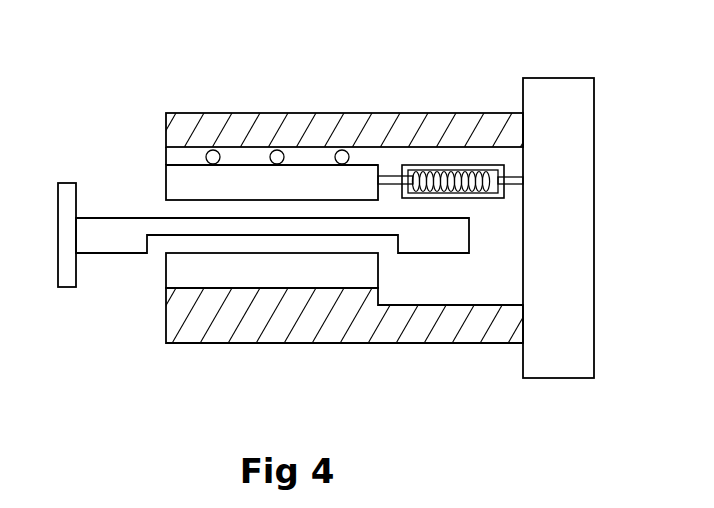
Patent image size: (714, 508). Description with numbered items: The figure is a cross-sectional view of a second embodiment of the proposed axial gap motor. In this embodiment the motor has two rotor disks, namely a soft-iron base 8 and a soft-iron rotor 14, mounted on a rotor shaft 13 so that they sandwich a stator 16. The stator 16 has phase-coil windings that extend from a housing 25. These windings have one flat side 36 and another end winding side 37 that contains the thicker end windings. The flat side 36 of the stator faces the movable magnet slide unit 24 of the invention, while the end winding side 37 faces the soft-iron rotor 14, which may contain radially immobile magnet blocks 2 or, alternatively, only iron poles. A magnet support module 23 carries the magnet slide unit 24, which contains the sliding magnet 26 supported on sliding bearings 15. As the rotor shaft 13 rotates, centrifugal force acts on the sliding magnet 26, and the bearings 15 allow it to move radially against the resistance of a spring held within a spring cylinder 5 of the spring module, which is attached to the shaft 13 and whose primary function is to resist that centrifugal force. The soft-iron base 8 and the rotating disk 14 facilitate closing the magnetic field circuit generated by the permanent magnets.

The radially immobile magnet blocks 2 is at (233, 270).
The spring cylinder 5 is at (508, 165).
The soft-iron base 8 is at (318, 128).
The rotor shaft 13 is at (585, 234).
The soft-iron rotor 14 is at (308, 326).
The sliding bearings 15 is at (217, 157).
The stator 16 is at (130, 238).
The magnet support module 23 is at (356, 90).
The magnet slide unit 24 is at (152, 157).
The housing 25 is at (68, 254).
The sliding magnet 26 is at (360, 183).
The flat side of the windings 36 is at (110, 218).
The end winding side of the stator 37 is at (98, 253).